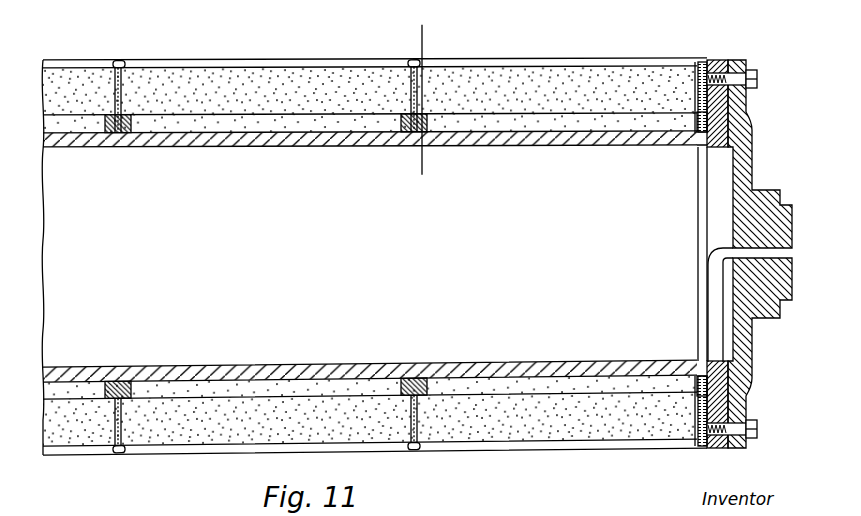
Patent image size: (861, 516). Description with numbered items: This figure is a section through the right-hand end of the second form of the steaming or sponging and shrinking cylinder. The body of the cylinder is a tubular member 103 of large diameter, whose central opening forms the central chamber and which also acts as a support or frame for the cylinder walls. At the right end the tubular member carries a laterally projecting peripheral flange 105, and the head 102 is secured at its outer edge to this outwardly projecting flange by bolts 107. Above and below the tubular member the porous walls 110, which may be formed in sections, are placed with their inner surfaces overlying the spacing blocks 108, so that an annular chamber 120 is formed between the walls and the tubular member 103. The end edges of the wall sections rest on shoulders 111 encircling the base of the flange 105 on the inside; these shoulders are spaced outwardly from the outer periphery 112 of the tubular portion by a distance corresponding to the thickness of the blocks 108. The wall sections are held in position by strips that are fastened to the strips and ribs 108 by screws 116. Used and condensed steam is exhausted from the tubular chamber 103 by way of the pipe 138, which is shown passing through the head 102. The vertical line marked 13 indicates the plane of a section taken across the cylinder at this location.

The section line 13- 13 is at (438, 197).
The head 102 is at (793, 115).
The tubular member 103 is at (390, 339).
The peripheral flange 105 is at (745, 36).
The bolt 107 is at (792, 51).
The spacing block 108 is at (215, 349).
The porous wall 110 is at (278, 78).
The shoulder 111 is at (682, 52).
The outer periphery 112 is at (565, 344).
The screw 116 is at (160, 40).
The annular chamber 120 is at (237, 123).
The pipe 138 is at (682, 243).